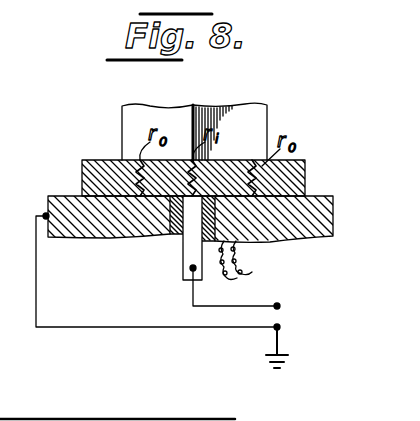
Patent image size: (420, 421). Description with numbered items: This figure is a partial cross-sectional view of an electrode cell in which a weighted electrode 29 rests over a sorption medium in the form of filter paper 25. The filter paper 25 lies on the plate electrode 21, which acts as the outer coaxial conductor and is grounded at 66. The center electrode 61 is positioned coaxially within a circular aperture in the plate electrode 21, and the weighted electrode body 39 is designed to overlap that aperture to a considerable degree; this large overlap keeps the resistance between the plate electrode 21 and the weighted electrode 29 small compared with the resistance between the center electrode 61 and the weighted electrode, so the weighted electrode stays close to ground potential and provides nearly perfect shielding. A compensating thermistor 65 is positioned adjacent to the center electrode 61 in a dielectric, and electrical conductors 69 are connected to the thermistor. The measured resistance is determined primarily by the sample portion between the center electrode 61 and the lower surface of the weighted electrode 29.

The weighted electrode body 39 is at (135, 112).
The weighted electrode 29 is at (247, 127).
The filter paper 25 is at (305, 172).
The plate electrode 21 is at (333, 204).
The center electrode 61 is at (183, 251).
The compensating thermistor 65 is at (302, 247).
The electrical conductors 69 is at (248, 280).
The ground 66 is at (284, 334).